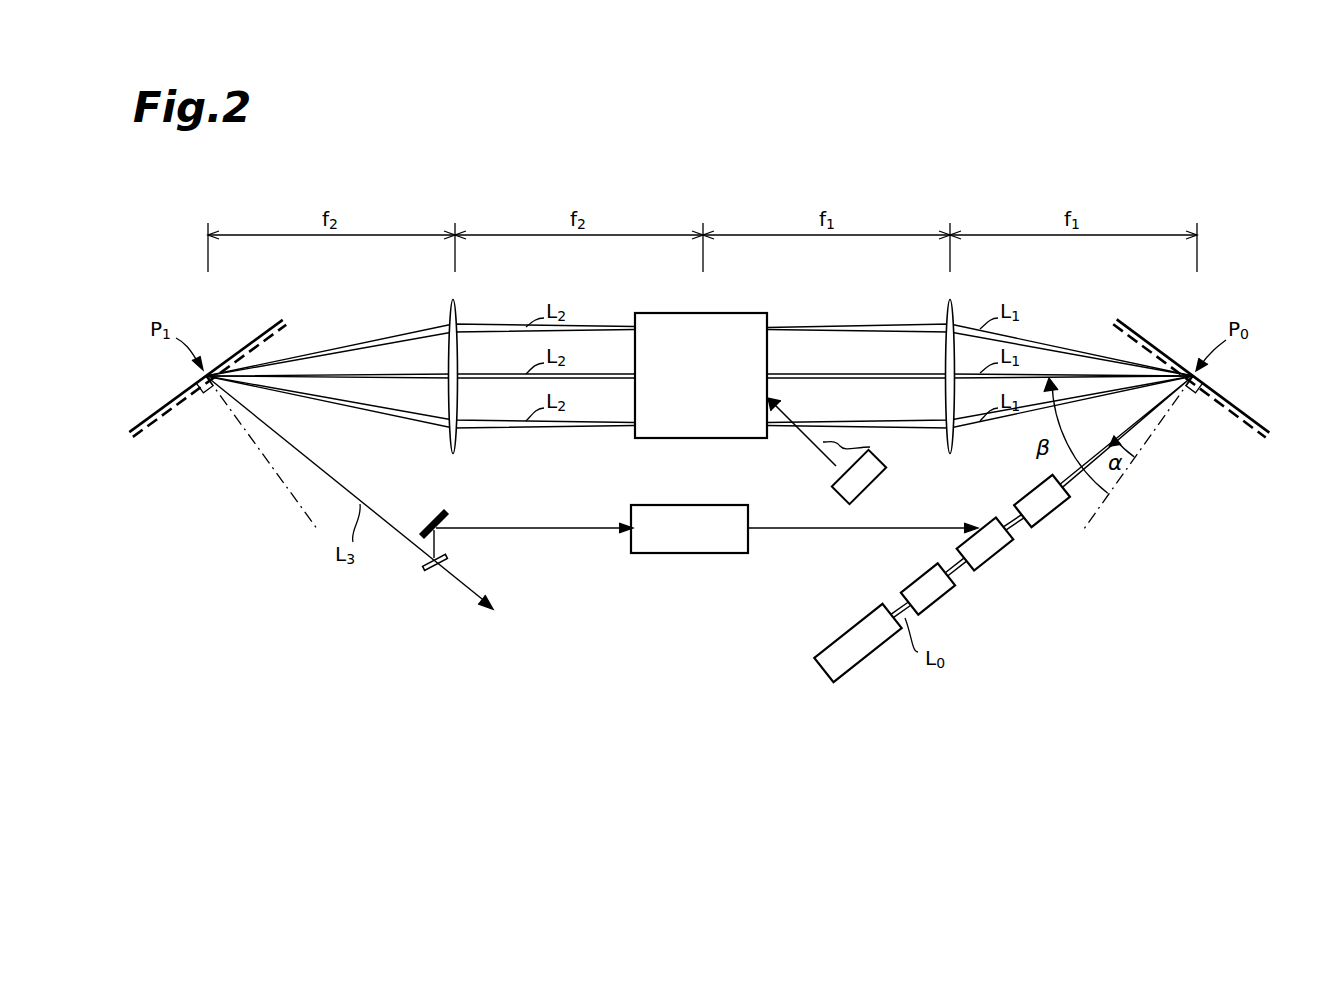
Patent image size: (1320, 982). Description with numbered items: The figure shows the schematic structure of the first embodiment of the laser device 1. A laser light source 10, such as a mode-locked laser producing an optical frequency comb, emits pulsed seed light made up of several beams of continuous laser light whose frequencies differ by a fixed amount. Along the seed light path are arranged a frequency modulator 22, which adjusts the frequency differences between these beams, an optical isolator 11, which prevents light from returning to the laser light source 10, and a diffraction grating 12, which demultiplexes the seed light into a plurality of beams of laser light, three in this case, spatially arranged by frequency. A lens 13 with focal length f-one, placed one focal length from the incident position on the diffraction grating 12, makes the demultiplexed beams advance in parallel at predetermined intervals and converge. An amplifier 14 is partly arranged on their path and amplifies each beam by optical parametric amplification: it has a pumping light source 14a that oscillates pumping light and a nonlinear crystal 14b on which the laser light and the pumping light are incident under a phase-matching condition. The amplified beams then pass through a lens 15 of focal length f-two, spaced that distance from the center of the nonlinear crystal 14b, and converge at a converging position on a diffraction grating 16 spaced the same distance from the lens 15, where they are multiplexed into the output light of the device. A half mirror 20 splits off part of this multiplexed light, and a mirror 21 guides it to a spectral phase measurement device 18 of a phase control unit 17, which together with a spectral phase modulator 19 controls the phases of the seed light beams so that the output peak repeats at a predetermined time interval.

The laser device 1 is at (1085, 134).
The laser light source 10 is at (860, 670).
The optical isolator 11 is at (1046, 518).
The diffraction grating 12 is at (1236, 406).
The lens 13 is at (955, 306).
The amplifier 14 is at (764, 419).
The pumping light source 14a is at (835, 470).
The nonlinear crystal 14b is at (737, 440).
The lens 15 is at (458, 306).
The diffraction grating 16 is at (182, 390).
The phase control unit 17 is at (822, 574).
The spectral phase measurement device 18 is at (704, 554).
The spectral phase modulator 19 is at (973, 540).
The half mirror 20 is at (432, 572).
The mirror 21 is at (428, 520).
The frequency modulator 22 is at (932, 606).